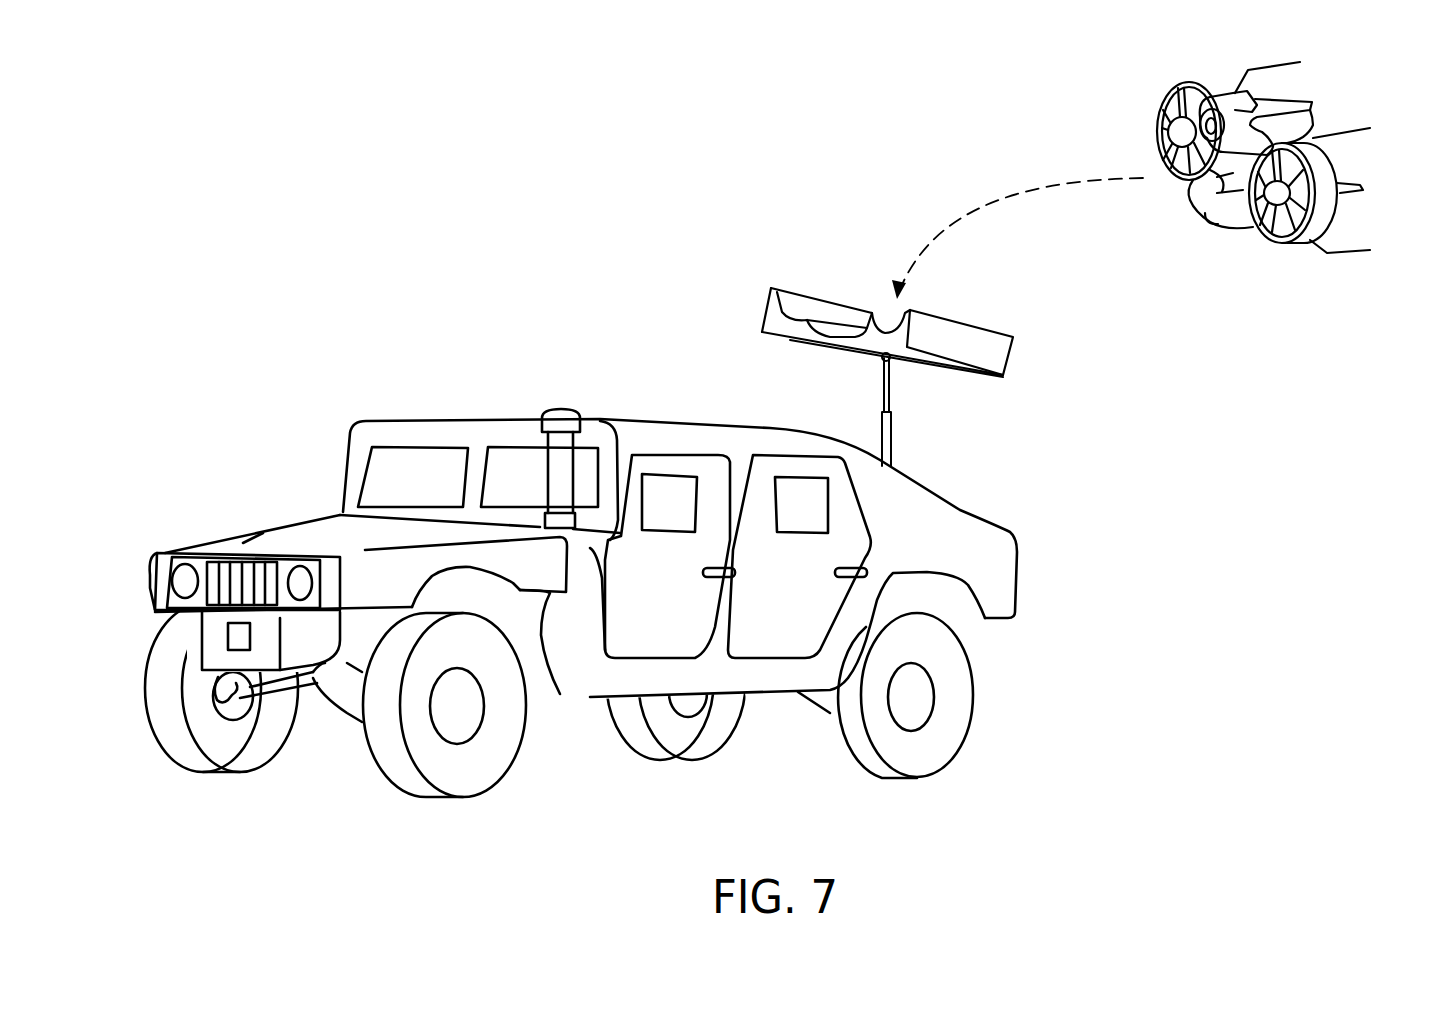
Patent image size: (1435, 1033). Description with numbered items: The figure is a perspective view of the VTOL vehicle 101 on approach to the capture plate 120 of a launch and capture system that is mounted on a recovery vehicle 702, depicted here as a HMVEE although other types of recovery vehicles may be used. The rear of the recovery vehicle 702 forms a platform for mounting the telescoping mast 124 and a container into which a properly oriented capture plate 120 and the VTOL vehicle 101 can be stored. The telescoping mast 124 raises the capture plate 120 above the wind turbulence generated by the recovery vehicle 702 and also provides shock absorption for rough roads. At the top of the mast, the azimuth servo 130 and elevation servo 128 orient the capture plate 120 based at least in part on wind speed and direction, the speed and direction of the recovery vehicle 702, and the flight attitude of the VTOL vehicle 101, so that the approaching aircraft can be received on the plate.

The recovery vehicle 702 is at (581, 541).
The capture plate 120 is at (770, 298).
The telescoping mast 124 is at (882, 420).
The elevation servo 128 is at (893, 358).
The azimuth servo 130 is at (900, 374).
The VTOL vehicle 101 is at (1263, 232).